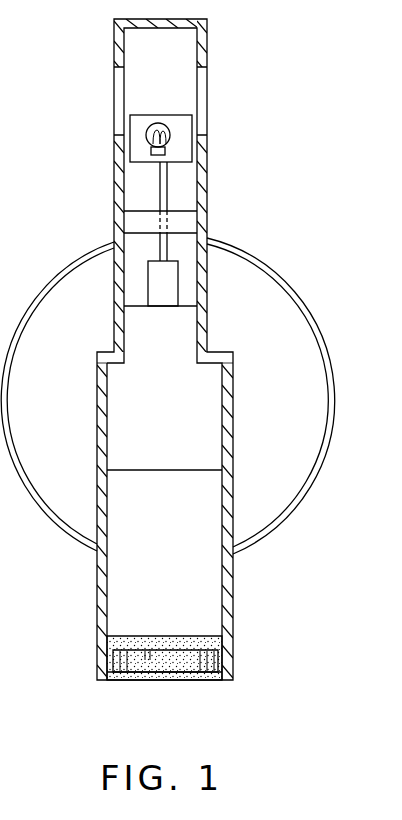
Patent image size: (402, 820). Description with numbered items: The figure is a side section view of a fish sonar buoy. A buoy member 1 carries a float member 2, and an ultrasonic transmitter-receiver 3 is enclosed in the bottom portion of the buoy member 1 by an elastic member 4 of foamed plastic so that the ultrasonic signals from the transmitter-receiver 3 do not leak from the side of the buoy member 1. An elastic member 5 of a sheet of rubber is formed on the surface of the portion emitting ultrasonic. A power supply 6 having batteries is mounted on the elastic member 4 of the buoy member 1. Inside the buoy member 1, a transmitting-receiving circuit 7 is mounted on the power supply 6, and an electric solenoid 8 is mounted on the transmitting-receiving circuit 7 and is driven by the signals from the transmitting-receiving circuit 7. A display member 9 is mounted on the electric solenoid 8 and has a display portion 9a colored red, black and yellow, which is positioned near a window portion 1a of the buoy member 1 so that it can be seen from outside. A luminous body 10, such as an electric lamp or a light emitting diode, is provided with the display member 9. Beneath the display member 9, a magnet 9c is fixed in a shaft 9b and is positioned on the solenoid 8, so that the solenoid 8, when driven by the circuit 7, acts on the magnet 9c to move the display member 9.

The buoy member 1 is at (161, 349).
The window portion 1a is at (201, 95).
The float member 2 is at (310, 306).
The ultrasonic transmitter-receiver 3 is at (193, 665).
The elastic member 4 is at (225, 645).
The elastic member 5 is at (150, 680).
The power supply 6 is at (125, 600).
The transmitting-receiving circuit 7 is at (210, 420).
The electric solenoid 8 is at (140, 340).
The display member 9 is at (152, 192).
The display portion 9a is at (193, 127).
The shaft 9b is at (190, 181).
The magnet 9c is at (178, 285).
The luminous body 10 is at (135, 128).